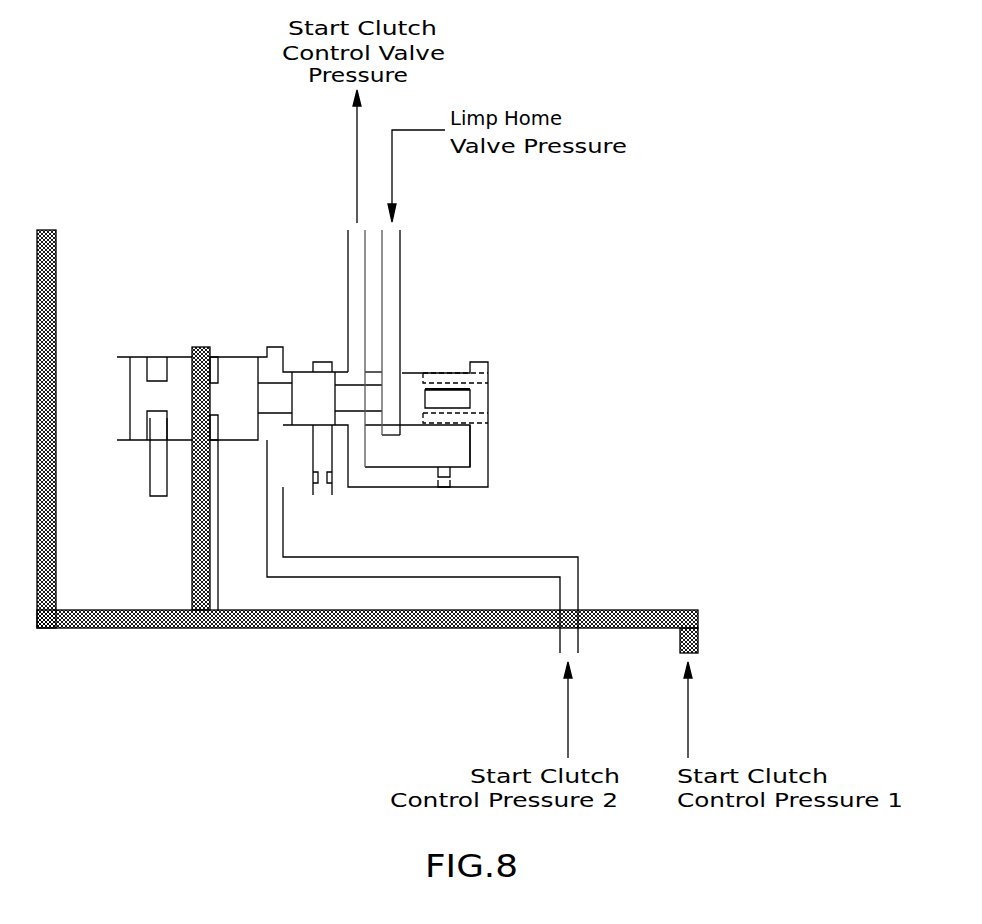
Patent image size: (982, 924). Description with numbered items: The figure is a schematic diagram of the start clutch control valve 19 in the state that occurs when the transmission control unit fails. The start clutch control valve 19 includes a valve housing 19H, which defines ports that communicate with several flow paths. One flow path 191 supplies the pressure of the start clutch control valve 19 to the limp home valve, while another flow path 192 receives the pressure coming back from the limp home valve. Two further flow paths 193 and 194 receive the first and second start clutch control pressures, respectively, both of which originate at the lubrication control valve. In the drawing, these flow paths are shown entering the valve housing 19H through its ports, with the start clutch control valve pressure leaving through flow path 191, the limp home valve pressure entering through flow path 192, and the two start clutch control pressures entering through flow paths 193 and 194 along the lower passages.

The start clutch control valve 19 is at (452, 362).
The valve housing 19H is at (180, 365).
The flow path 191 is at (358, 283).
The flow path 192 is at (397, 262).
The flow path 193 is at (192, 556).
The flow path 194 is at (533, 562).